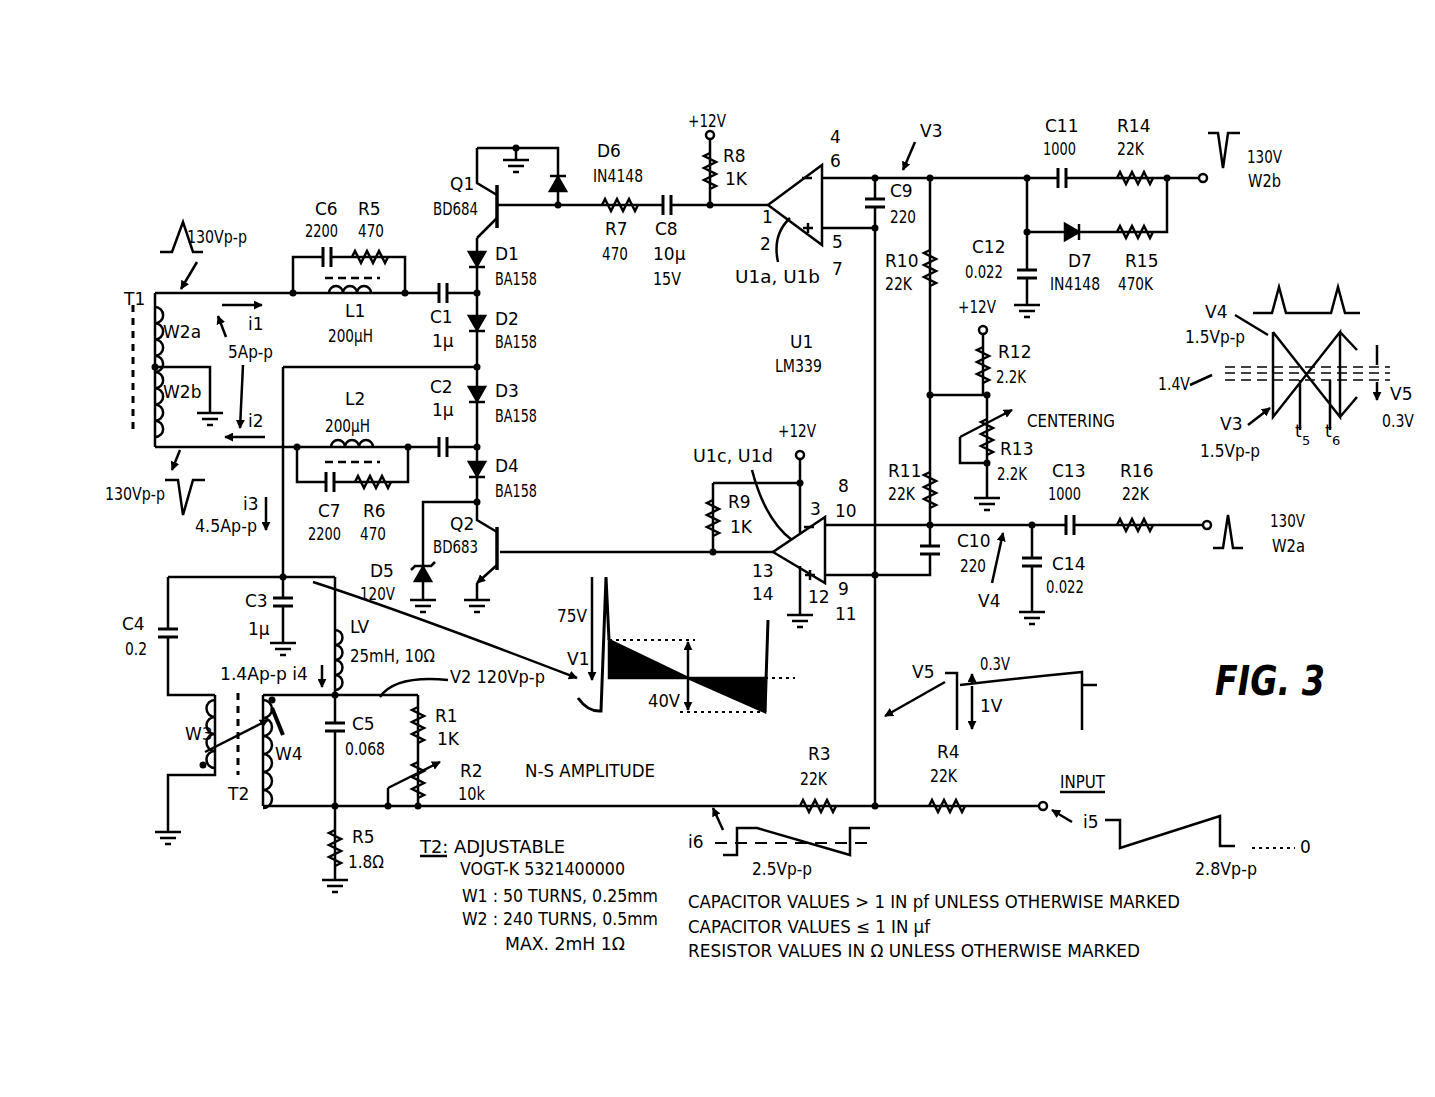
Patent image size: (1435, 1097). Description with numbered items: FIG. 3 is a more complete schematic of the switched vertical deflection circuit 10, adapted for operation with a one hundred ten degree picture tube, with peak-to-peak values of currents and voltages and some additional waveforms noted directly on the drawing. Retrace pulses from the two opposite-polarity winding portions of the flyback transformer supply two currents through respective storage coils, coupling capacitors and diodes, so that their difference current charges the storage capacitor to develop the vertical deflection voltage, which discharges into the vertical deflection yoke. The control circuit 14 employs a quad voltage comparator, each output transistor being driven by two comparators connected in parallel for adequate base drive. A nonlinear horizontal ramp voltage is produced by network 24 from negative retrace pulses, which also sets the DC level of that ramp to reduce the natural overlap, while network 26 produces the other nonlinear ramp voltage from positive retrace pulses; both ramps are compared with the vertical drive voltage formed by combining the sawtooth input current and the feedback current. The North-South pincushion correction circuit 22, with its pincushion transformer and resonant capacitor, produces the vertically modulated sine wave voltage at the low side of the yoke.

The switched vertical deflection system 10 is at (843, 722).
The control circuit 14 is at (861, 421).
The North-South pincushion correction circuit 22 is at (206, 684).
The network 24 is at (1114, 214).
The network 26 is at (1128, 566).